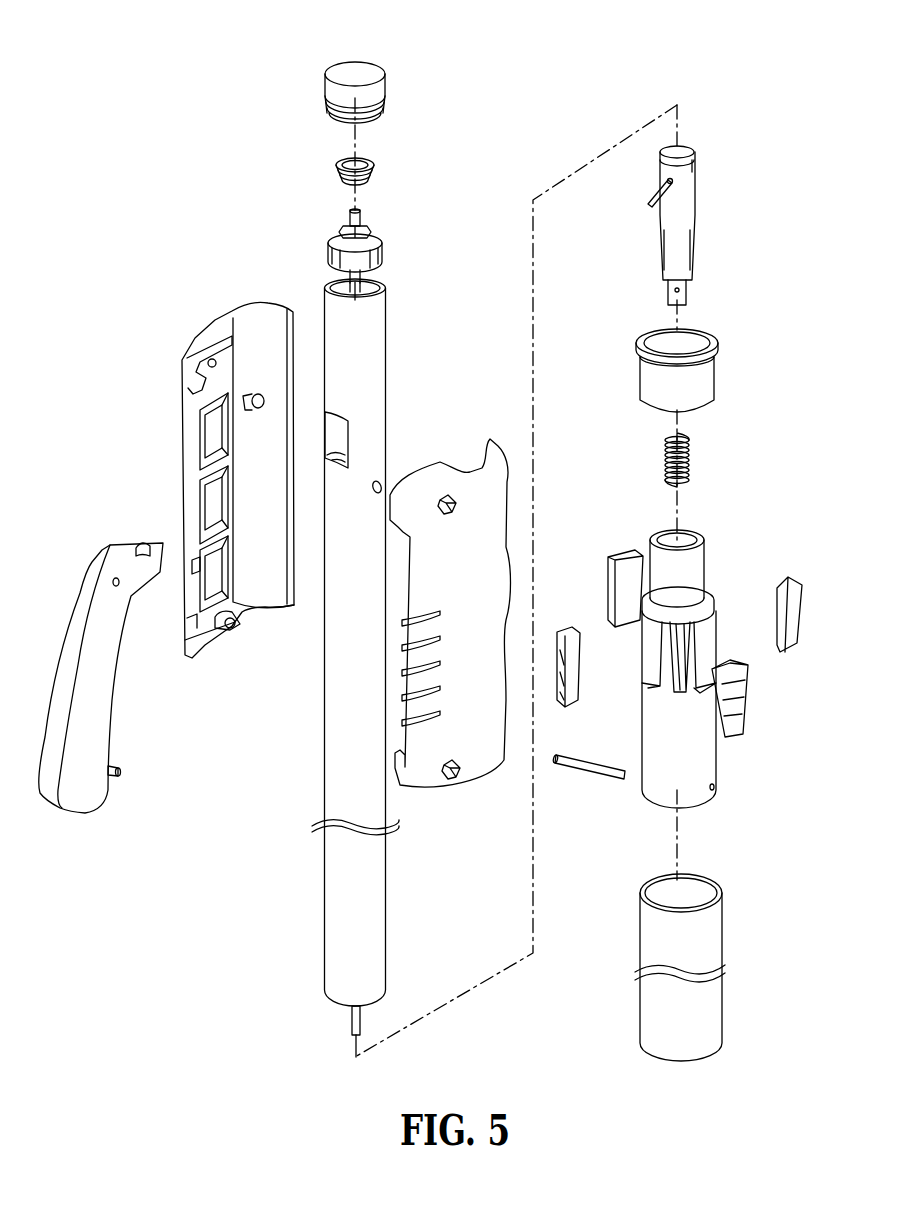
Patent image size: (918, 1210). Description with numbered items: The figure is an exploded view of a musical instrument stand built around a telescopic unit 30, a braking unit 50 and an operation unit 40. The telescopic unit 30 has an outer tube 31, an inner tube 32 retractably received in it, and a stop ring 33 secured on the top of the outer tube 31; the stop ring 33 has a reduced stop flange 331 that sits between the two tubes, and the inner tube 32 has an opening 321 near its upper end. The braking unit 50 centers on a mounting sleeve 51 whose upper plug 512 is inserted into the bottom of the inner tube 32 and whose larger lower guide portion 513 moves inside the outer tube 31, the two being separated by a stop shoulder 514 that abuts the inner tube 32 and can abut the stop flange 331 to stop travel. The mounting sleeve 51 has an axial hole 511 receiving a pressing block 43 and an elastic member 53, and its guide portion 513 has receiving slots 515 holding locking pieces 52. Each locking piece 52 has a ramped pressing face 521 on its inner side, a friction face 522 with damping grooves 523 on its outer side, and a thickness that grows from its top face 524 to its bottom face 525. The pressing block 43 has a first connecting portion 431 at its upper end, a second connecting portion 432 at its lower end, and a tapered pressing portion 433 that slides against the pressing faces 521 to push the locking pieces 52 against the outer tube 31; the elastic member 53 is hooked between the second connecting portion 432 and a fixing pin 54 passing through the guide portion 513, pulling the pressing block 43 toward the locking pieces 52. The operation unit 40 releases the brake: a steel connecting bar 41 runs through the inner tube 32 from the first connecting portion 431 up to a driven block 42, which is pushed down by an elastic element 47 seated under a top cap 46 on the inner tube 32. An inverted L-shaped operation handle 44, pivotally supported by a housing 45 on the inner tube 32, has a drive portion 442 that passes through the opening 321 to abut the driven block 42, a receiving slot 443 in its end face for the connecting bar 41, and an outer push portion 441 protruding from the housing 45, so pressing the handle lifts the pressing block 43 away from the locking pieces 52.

The telescopic unit 30 is at (316, 971).
The outer tube 31 is at (712, 1000).
The inner tube 32 is at (338, 906).
The opening 321 is at (340, 442).
The stop ring 33 is at (705, 329).
The stop flange 331 is at (705, 405).
The operation unit 40 is at (178, 232).
The connecting bar 41 is at (372, 290).
The driven block 42 is at (372, 228).
The pressing block 43 is at (688, 206).
The first connecting portion 431 is at (660, 174).
The second connecting portion 432 is at (668, 290).
The tapered pressing portion 433 is at (665, 242).
The operation handle 44 is at (88, 563).
The push portion 441 is at (70, 650).
The drive portion 442 is at (108, 562).
The receiving slot 443 is at (143, 545).
The housing 45 is at (190, 440).
The top cap 46 is at (385, 88).
The elastic element 47 is at (378, 168).
The braking unit 50 is at (783, 504).
The mounting sleeve 51 is at (704, 549).
The axial hole 511 is at (690, 538).
The plug 512 is at (698, 572).
The guide portion 513 is at (698, 792).
The stop shoulder 514 is at (712, 608).
The receiving slots 515 is at (698, 648).
The locking pieces 52 is at (803, 618).
The pressing face 521 is at (747, 681).
The friction face 522 is at (800, 603).
The damping grooves 523 is at (750, 690).
The top face 524 is at (573, 635).
The bottom face 525 is at (565, 710).
The elastic member 53 is at (695, 453).
The fixing pin 54 is at (588, 775).